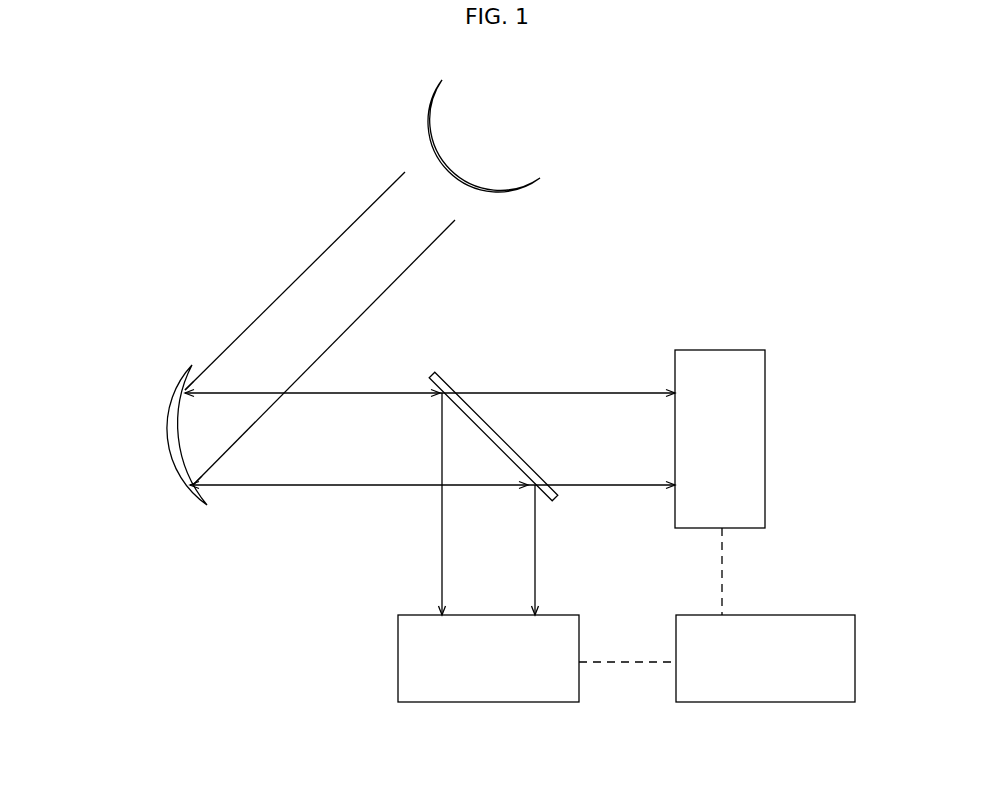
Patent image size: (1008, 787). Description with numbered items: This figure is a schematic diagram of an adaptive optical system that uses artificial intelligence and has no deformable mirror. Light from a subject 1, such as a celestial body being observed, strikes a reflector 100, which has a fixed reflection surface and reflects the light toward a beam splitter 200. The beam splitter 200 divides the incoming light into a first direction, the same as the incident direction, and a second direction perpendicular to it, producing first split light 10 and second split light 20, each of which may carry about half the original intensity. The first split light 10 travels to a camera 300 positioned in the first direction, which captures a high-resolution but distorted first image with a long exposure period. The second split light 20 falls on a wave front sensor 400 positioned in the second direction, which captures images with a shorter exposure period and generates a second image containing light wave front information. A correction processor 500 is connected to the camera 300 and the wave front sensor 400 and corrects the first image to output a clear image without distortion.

The subject 1 is at (411, 120).
The first split light 10 is at (577, 392).
The second split light 20 is at (440, 563).
The reflector 100 is at (170, 388).
The beam splitter 200 is at (450, 380).
The camera 300 is at (722, 348).
The wave front sensor 400 is at (470, 703).
The correction processor 500 is at (755, 703).